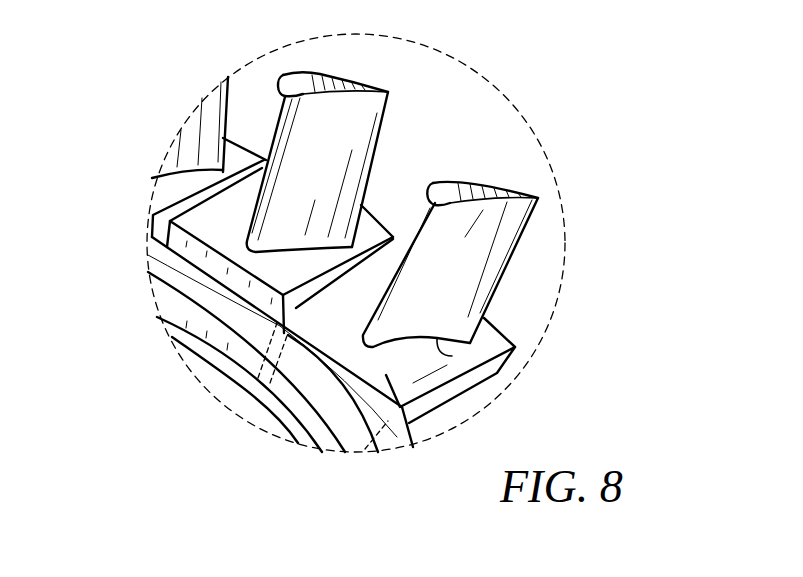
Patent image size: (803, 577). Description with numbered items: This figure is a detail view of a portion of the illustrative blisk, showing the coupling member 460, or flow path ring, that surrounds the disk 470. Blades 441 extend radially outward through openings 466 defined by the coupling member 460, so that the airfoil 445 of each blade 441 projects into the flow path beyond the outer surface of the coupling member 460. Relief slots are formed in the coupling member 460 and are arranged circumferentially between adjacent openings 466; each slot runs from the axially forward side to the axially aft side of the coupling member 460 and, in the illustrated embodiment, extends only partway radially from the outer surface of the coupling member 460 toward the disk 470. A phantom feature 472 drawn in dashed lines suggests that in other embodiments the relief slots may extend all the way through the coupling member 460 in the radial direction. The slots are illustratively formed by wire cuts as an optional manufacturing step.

The blade 441 is at (395, 110).
The airfoil 445 is at (288, 106).
The coupling member 460 is at (482, 354).
The openings 466 is at (283, 253).
The disk 470 is at (262, 410).
The hidden blade root 472 is at (223, 362).